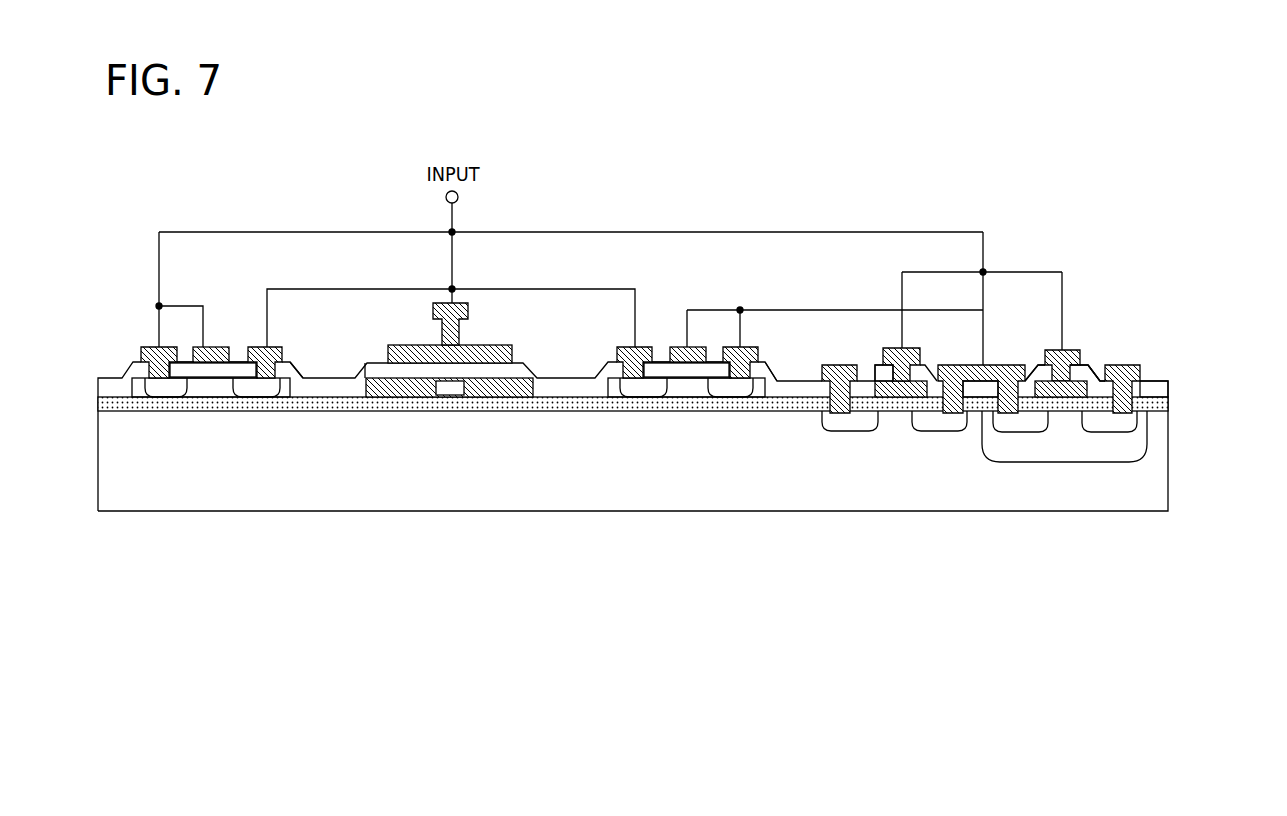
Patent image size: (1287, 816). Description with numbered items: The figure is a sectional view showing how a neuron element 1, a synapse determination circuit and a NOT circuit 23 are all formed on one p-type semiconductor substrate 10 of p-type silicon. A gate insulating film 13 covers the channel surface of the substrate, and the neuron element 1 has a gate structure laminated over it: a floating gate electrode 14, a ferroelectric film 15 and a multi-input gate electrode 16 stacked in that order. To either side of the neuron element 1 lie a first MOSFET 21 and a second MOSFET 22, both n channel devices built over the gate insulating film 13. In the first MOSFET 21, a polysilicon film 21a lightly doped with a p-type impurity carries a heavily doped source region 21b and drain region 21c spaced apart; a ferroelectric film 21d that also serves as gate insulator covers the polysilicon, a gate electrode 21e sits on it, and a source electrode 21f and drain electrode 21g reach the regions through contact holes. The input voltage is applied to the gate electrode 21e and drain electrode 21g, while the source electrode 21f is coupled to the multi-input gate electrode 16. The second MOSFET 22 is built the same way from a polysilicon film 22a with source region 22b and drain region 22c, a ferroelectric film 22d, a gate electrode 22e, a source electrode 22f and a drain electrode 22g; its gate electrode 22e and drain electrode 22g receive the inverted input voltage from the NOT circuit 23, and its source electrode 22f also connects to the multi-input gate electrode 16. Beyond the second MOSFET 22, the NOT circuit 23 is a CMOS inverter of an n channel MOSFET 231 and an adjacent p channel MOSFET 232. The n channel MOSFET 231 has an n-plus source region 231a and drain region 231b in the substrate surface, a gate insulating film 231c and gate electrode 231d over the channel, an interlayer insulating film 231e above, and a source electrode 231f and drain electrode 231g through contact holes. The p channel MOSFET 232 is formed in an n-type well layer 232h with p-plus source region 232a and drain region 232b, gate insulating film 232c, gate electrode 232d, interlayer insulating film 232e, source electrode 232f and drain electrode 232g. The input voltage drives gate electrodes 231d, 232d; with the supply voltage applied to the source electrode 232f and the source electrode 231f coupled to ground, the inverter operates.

The p-type semiconductor substrate 10 is at (1158, 453).
The gate insulating film 13 is at (372, 407).
The neuron element 1 is at (510, 378).
The floating gate electrode 14 is at (536, 380).
The ferroelectric film 15 is at (517, 372).
The multi-input gate electrode 16 is at (483, 345).
The first MOSFET 21 is at (215, 396).
The polysilicon film 21a is at (225, 388).
The source region 21b is at (292, 362).
The drain region 21c is at (146, 388).
The ferroelectric film 21d is at (178, 360).
The gate electrode 21e is at (203, 346).
The source electrode 21f is at (265, 346).
The drain electrode 21g is at (145, 346).
The second MOSFET 22 is at (625, 404).
The polysilicon film 22a is at (700, 376).
The source region 22b is at (622, 378).
The drain region 22c is at (745, 378).
The ferroelectric film 22d is at (655, 375).
The gate electrode 22e is at (690, 346).
The source electrode 22f is at (640, 346).
The drain electrode 22g is at (752, 372).
The NOT circuit 23 is at (1009, 389).
The n channel MOSFET 231 is at (924, 373).
The source region 231a is at (877, 375).
The drain region 231b is at (978, 367).
The gate insulating film 231c is at (881, 352).
The gate electrode 231d is at (895, 348).
The interlayer insulating film 231e is at (922, 372).
The source electrode 231f is at (826, 366).
The drain electrode 231g is at (955, 365).
The p channel MOSFET 232 is at (1107, 374).
The source region 232a is at (1142, 397).
The drain region 232b is at (1053, 350).
The gate insulating film 232c is at (1095, 385).
The gate electrode 232d is at (1084, 372).
The interlayer insulating film 232e is at (1108, 384).
The source electrode 232f is at (1145, 372).
The drain electrode 232g is at (1005, 365).
The n-type well layer 232h is at (1125, 443).